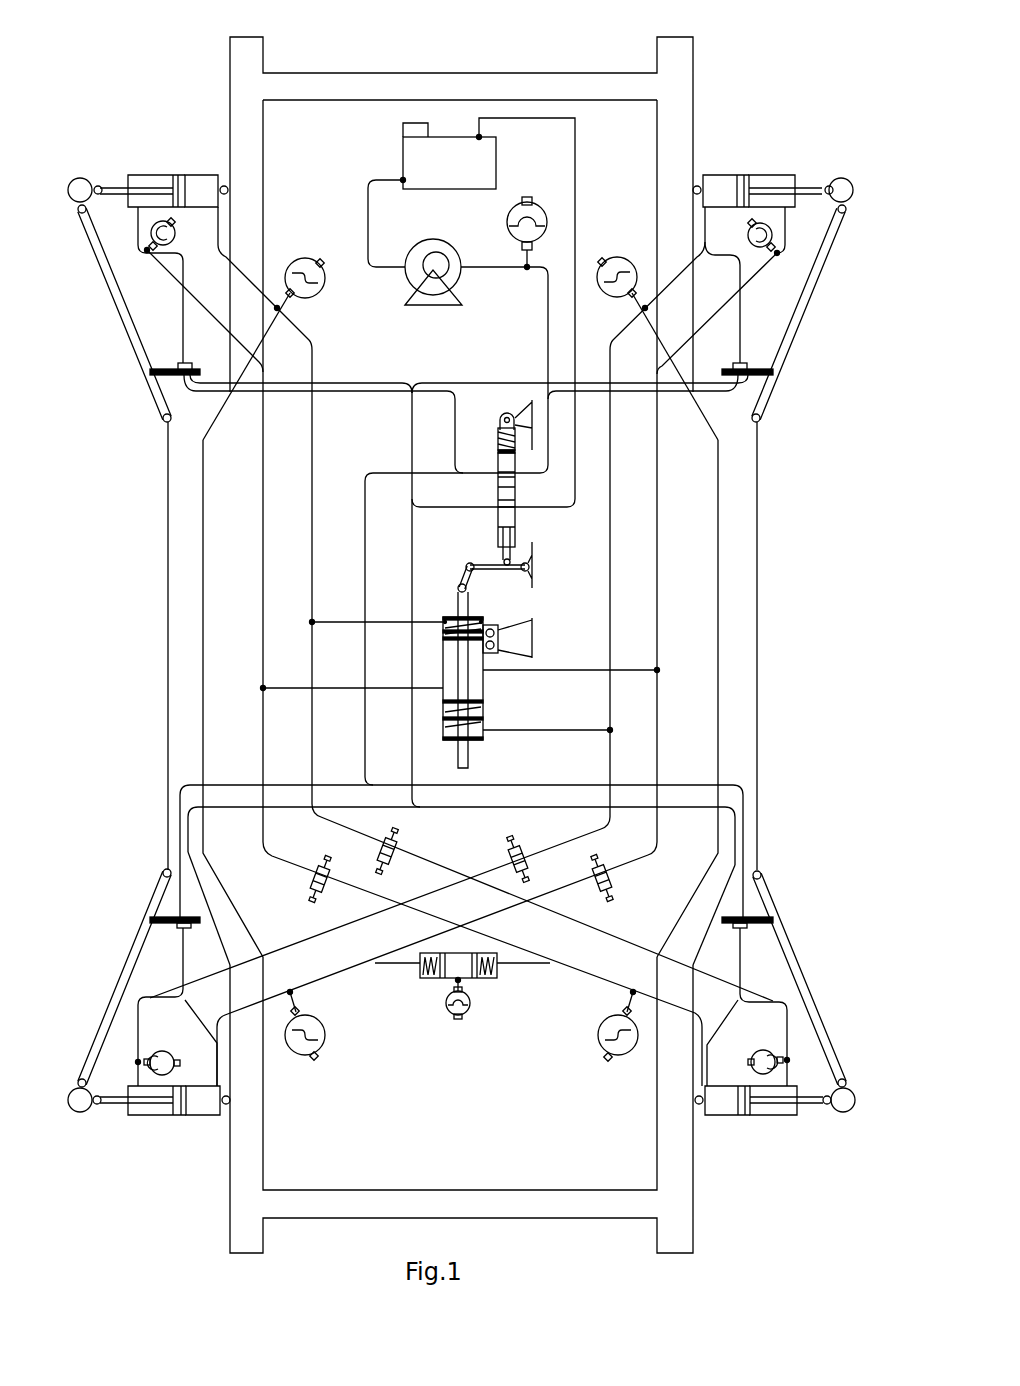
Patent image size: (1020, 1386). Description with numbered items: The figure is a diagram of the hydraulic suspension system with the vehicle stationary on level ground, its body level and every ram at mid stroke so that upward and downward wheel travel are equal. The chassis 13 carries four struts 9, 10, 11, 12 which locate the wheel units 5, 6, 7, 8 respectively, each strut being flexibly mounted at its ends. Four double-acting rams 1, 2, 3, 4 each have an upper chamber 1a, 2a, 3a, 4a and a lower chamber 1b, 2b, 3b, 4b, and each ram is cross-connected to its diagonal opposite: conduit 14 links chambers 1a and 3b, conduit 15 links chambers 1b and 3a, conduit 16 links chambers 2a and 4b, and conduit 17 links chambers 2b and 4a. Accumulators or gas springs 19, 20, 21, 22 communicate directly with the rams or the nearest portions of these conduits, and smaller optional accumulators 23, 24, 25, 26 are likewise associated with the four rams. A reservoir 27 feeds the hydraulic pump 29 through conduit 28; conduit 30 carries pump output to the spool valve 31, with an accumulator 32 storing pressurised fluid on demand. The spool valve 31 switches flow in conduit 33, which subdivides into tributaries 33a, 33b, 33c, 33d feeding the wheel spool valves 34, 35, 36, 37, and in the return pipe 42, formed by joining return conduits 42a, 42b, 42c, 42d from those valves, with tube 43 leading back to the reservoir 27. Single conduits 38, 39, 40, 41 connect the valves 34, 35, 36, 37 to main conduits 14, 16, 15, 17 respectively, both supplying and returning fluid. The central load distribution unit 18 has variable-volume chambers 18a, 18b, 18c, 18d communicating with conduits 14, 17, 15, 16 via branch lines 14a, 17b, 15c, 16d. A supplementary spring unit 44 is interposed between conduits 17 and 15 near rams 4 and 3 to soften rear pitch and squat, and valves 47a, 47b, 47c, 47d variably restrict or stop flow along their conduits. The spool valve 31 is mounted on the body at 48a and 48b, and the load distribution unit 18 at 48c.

The hydraulic ram 1 is at (162, 168).
The upper chamber 1a is at (200, 175).
The lower chamber 1b is at (150, 175).
The hydraulic ram 2 is at (751, 168).
The upper chamber 2a is at (727, 175).
The lower chamber 2b is at (777, 175).
The hydraulic ram 3 is at (752, 1135).
The upper chamber 3a is at (723, 1118).
The lower chamber 3b is at (775, 1120).
The hydraulic ram 4 is at (170, 1133).
The upper chamber 4a is at (202, 1117).
The lower chamber 4b is at (145, 1117).
The wheel unit 5 is at (78, 178).
The wheel unit 6 is at (848, 180).
The wheel unit 7 is at (845, 1115).
The wheel unit 8 is at (73, 1092).
The strut 9 is at (105, 287).
The strut 10 is at (790, 347).
The strut 11 is at (812, 983).
The strut 12 is at (128, 942).
The chassis 13 is at (514, 73).
The interconnecting conduit 14 is at (312, 348).
The branch line 14a is at (347, 620).
The interconnecting conduit 15 is at (263, 617).
The conduit 15c is at (348, 688).
The interconnecting conduit 16 is at (612, 513).
The branch line 16d is at (547, 733).
The interconnecting conduit 17 is at (710, 320).
The branch line 17b is at (556, 680).
The load distribution unit 18 is at (483, 618).
The internal chamber 18a is at (447, 617).
The internal chamber 18b is at (447, 663).
The internal chamber 18c is at (443, 693).
The internal chamber 18d is at (445, 740).
The accumulator 19 is at (305, 258).
The accumulator 20 is at (617, 258).
The accumulator 21 is at (602, 1057).
The accumulator 22 is at (318, 1057).
The accumulator 23 is at (150, 235).
The accumulator 24 is at (772, 235).
The accumulator 25 is at (777, 1050).
The accumulator 26 is at (152, 1070).
The reservoir 27 is at (480, 137).
The conduit 28 is at (368, 180).
The hydraulic pump 29 is at (433, 240).
The conduit 30 is at (487, 272).
The spool valve 31 is at (528, 490).
The accumulator 32 is at (527, 198).
The conduit 33 is at (478, 470).
The tributary conduit 33a is at (377, 393).
The tributary conduit 33b is at (678, 397).
The tributary conduit 33c is at (707, 780).
The tributary conduit 33d is at (207, 782).
The spool valve 34 is at (157, 373).
The spool valve 35 is at (760, 373).
The spool valve 36 is at (763, 915).
The spool valve 37 is at (163, 915).
The conduit 38 is at (183, 303).
The conduit 39 is at (742, 307).
The conduit 40 is at (742, 957).
The conduit 41 is at (182, 963).
The conduit 42 is at (463, 512).
The return conduit 42a is at (358, 380).
The return conduit 42b is at (500, 380).
The return conduit 42c is at (677, 808).
The return conduit 42d is at (243, 808).
The conduit 43 is at (575, 143).
The spring unit 44 is at (483, 980).
The valve 47a is at (397, 842).
The valve 47b is at (520, 850).
The valve 47c is at (615, 890).
The valve 47d is at (312, 898).
The mounting 48a is at (586, 438).
The mounting 48b is at (532, 563).
The mounting 48c is at (533, 637).